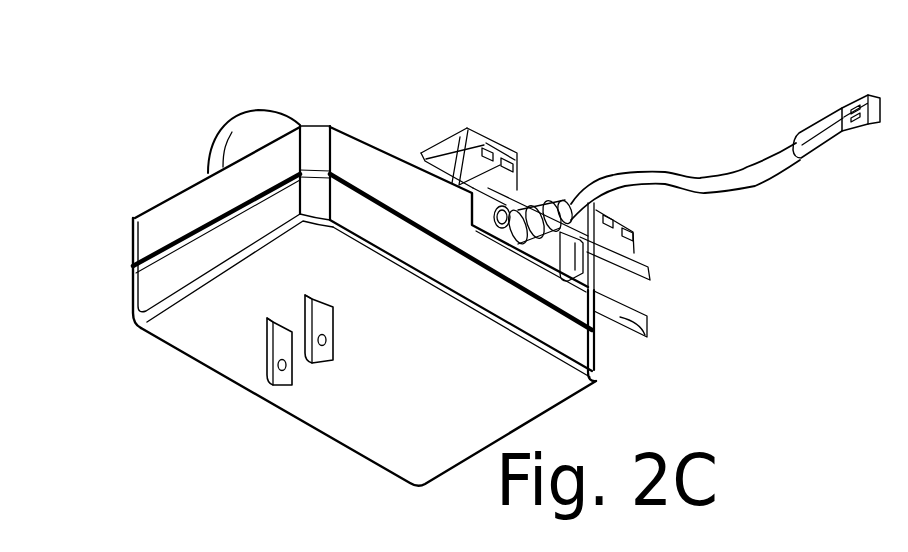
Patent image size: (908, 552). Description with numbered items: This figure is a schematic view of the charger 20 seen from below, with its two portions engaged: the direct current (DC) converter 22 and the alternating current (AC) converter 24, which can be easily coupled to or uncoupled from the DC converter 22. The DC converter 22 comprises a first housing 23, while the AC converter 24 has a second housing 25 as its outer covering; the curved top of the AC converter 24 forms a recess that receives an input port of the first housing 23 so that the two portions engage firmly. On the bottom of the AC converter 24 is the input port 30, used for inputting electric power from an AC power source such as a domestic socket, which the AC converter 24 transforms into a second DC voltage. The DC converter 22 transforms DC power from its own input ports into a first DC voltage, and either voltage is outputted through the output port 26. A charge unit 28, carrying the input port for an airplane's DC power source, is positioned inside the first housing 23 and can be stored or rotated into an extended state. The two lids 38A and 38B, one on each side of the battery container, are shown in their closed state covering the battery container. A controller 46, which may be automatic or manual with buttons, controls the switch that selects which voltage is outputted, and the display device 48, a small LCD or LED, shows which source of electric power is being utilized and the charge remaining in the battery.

The charger 20 is at (170, 104).
The direct current (DC) converter 22 is at (562, 166).
The first housing 23 is at (614, 340).
The alternating current (AC) converter 24 is at (110, 226).
The second housing 25 is at (357, 420).
The output port 26 is at (846, 110).
The charge unit 28 is at (617, 295).
The input port 30 is at (278, 342).
The lid 38A is at (460, 132).
The lid 38B is at (415, 158).
The controller 46 is at (537, 194).
The display device 48 is at (637, 253).